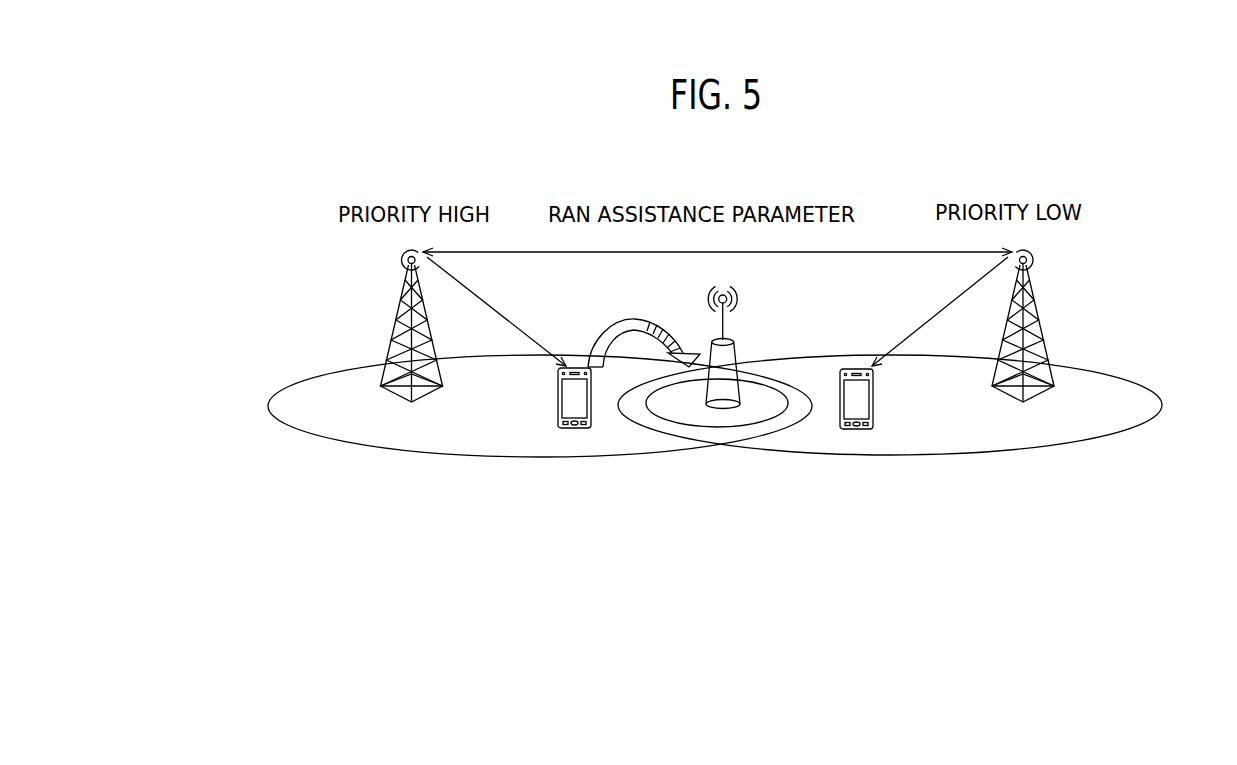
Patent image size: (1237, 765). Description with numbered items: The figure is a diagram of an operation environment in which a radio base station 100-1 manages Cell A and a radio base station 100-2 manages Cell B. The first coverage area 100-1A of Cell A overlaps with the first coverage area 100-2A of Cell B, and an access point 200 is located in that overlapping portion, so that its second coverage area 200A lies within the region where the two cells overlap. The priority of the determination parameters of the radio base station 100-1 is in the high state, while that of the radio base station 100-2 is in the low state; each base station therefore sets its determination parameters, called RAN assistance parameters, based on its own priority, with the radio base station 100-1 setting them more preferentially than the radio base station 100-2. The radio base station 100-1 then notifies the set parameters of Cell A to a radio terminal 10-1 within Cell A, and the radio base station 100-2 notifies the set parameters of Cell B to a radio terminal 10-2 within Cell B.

The radio base station 100-1 is at (399, 306).
The radio base station 100-2 is at (1036, 306).
The first coverage area 100-1A is at (283, 391).
The first coverage area 100-2A is at (1145, 388).
The radio terminal 10-1 is at (572, 430).
The radio terminal 10-2 is at (857, 431).
The access point 200 is at (735, 346).
The second coverage area 200A is at (722, 427).